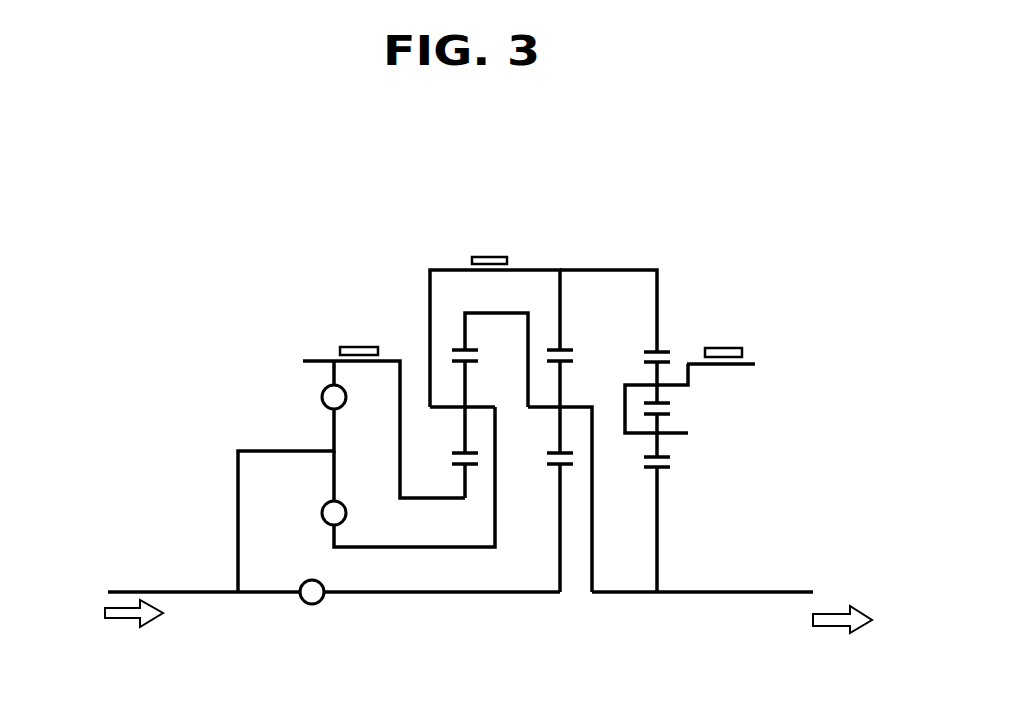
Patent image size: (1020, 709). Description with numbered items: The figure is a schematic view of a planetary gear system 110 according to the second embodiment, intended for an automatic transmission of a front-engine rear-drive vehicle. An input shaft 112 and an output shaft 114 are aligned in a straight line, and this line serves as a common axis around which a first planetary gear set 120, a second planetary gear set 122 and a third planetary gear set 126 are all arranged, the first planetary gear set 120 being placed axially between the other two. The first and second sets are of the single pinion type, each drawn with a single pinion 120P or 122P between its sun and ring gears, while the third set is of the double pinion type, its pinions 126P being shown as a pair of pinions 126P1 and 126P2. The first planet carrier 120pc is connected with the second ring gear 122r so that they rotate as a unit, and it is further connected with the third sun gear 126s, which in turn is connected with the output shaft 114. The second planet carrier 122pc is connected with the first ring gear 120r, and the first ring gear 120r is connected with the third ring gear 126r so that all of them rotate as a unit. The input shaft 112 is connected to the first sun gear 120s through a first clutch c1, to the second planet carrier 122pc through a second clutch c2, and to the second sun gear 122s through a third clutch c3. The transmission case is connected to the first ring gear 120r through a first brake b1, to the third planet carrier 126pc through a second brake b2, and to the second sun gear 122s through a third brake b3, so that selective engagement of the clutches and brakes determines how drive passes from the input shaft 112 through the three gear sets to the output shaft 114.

The planetary gear system 110 is at (671, 246).
The input shaft 112 is at (190, 594).
The output shaft 114 is at (790, 592).
The first planetary gear set 120 is at (569, 512).
The first ring gear 120r is at (565, 300).
The first planet carrier 120pc is at (582, 406).
The pinion gear of first planetary gear set 120P is at (560, 433).
The first sun gear 120s is at (560, 482).
The second planetary gear set 122 is at (465, 518).
The second ring gear 122r is at (465, 330).
The pinion gear of second planetary gear set 122P is at (465, 430).
The second sun gear 122s is at (448, 498).
The second planet carrier 122pc is at (478, 408).
The third planetary gear set 126 is at (678, 500).
The third ring gear 126r is at (657, 312).
The third planet carrier 126pc is at (688, 377).
The pinion gears of third planetary gear set 126P is at (827, 428).
The first pinion gear of third planetary gear set 126P1 is at (658, 393).
The second pinion gear of third planetary gear set 126P2 is at (658, 440).
The third sun gear 126s is at (673, 477).
The first clutch c1 is at (310, 612).
The second clutch c2 is at (387, 477).
The third clutch c3 is at (292, 476).
The first brake b1 is at (489, 243).
The second brake b2 is at (721, 340).
The third brake b3 is at (384, 405).